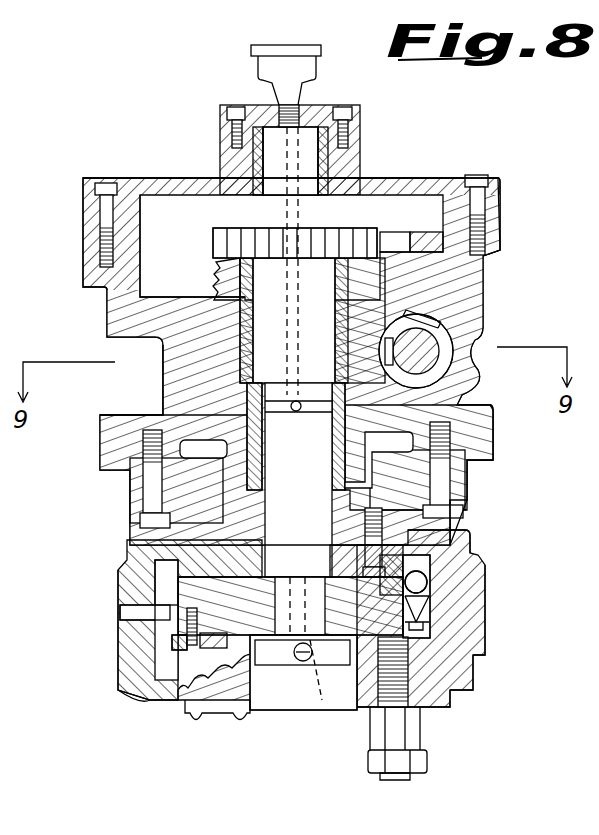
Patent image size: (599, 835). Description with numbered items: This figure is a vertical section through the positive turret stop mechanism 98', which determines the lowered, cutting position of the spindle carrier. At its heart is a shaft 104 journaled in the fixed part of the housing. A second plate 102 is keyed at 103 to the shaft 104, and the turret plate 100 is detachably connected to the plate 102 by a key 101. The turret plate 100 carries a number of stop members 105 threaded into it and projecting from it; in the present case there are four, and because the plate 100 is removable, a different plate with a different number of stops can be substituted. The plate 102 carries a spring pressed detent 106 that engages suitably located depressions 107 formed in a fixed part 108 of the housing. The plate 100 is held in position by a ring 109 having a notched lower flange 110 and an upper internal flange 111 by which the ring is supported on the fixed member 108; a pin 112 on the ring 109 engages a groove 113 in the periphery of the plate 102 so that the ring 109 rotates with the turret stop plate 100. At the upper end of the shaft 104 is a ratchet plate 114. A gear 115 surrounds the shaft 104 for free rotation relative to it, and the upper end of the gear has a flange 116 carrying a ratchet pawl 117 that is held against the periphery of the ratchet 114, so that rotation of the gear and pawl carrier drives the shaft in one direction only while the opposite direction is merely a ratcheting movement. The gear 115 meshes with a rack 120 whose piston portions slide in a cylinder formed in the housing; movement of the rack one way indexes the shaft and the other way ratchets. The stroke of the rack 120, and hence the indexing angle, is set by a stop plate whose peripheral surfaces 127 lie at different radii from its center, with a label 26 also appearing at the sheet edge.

The positive turret stop mechanism 98' is at (291, 186).
The turret plate 100 is at (440, 700).
The key 101 is at (162, 645).
The second plate 102 is at (182, 618).
The key 103 is at (303, 672).
The shaft 104 is at (302, 215).
The stop members 105 is at (370, 718).
The spring pressed detent 106 is at (420, 582).
The depressions 107 is at (428, 570).
The fixed part of the housing 108 is at (435, 556).
The ring 109 is at (475, 620).
The notched lower flange 110 is at (445, 680).
The upper internal flange 111 is at (458, 540).
The pin 112 is at (133, 615).
The groove 113 is at (165, 597).
The ratchet plate 114 is at (236, 230).
The gear 115 is at (163, 370).
The flange 116 is at (150, 265).
The ratchet pawl 117 is at (388, 238).
The rack 120 is at (470, 340).
The surfaces 127 is at (0, 776).
The lead 26 is at (16, 803).